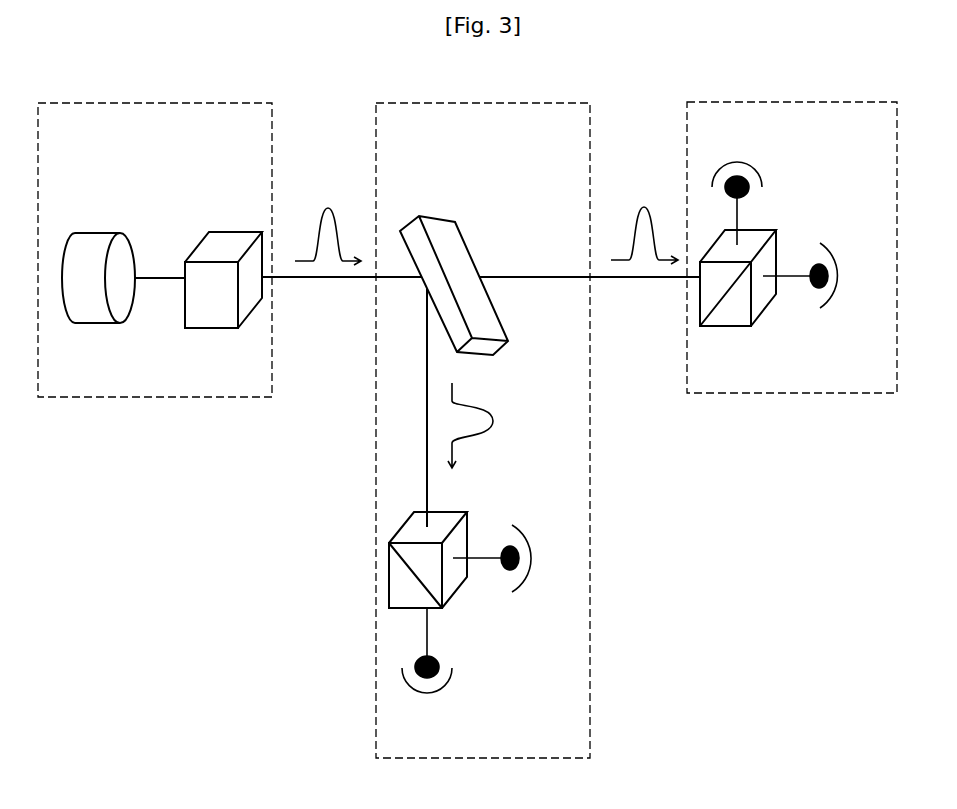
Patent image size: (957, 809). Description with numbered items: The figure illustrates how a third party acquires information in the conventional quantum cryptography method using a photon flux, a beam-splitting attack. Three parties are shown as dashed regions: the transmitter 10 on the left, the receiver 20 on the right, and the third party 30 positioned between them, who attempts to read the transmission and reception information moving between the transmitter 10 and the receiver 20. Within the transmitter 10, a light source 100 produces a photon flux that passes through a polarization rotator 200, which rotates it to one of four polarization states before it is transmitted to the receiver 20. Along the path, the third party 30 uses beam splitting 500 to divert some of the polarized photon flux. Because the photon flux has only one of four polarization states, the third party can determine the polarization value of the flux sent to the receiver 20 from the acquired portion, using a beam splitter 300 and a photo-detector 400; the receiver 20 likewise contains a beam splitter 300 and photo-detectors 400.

The transmitter 10 is at (155, 234).
The receiver 20 is at (792, 230).
The third party 30 is at (483, 416).
The light source 100 is at (98, 300).
The polarization rotator 200 is at (198, 300).
The beam splitter 300 is at (582, 421).
The photo-detector 400 is at (646, 425).
The beam splitting 500 is at (454, 266).